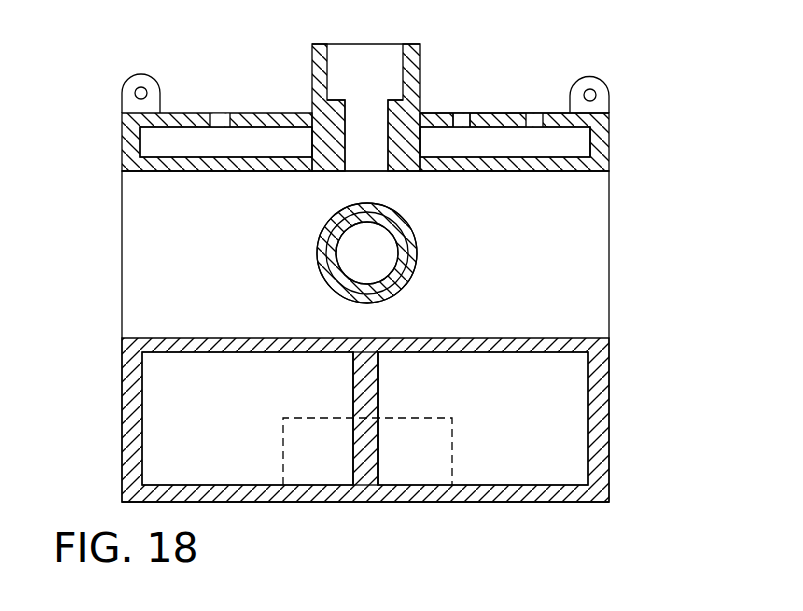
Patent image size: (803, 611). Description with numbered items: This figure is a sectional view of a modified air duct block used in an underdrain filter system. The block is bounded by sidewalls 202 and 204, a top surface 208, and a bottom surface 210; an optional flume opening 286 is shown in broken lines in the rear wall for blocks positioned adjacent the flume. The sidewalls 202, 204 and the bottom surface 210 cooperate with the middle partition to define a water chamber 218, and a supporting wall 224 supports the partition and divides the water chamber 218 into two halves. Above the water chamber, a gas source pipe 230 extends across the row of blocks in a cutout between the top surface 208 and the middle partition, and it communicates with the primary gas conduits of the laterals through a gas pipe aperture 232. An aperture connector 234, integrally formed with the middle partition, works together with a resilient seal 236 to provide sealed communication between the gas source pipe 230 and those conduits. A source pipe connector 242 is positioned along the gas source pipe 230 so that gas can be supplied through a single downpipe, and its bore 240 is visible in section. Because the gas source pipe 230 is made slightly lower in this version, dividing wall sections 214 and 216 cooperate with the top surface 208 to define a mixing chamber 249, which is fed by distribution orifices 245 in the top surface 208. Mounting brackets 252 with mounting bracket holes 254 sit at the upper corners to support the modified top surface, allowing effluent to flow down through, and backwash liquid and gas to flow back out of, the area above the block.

The sidewall 202 is at (122, 433).
The sidewall 204 is at (610, 433).
The top surface 208 is at (433, 113).
The bottom surface 210 is at (370, 502).
The dividing wall section 214 is at (175, 155).
The dividing wall section 216 is at (122, 147).
The water chamber 218 is at (259, 433).
The supporting wall 224 is at (378, 392).
The gas source pipe 230 is at (520, 173).
The gas pipe aperture 232 is at (386, 263).
The aperture connector 234 is at (402, 277).
The resilient seal 236 is at (397, 215).
The bore 240 is at (347, 127).
The source pipe connector 242 is at (312, 75).
The distribution orifices 245 is at (461, 118).
The mixing chamber 249 is at (563, 142).
The mounting bracket 252 is at (123, 90).
The mounting bracket hole 254 is at (590, 95).
The flume opening 286 is at (418, 463).